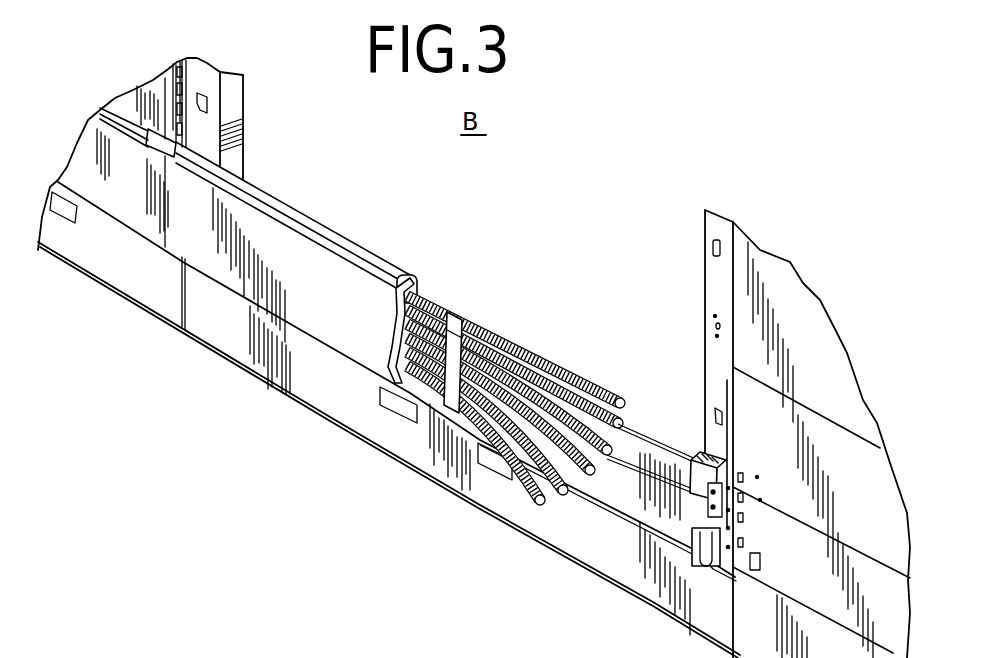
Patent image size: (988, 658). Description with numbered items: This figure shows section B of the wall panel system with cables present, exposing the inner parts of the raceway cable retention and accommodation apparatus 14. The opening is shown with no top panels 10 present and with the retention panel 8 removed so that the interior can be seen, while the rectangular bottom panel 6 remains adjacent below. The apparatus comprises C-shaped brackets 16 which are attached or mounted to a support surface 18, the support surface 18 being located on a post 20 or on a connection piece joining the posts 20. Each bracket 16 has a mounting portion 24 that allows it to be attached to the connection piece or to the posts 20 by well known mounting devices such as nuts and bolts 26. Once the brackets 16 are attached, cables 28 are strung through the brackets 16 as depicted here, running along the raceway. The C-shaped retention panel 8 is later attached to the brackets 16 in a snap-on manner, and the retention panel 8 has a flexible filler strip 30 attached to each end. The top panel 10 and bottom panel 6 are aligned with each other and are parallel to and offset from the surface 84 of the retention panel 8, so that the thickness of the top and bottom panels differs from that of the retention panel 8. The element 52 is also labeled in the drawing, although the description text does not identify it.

The bottom panel 6 is at (615, 567).
The retention panel 8 is at (312, 220).
The top panel 10 is at (845, 363).
The raceway cable retention and accommodation apparatus 14 is at (644, 342).
The C-shaped bracket 16 is at (458, 313).
The support surface 18 is at (730, 400).
The post 20 is at (235, 80).
The mounting portion 24 is at (738, 532).
The nuts and bolts 26 is at (732, 513).
The cables 28 is at (523, 352).
The flexible filler strip 30 is at (512, 657).
The lower element 52 is at (420, 657).
The surface of retention panel 84 is at (350, 297).